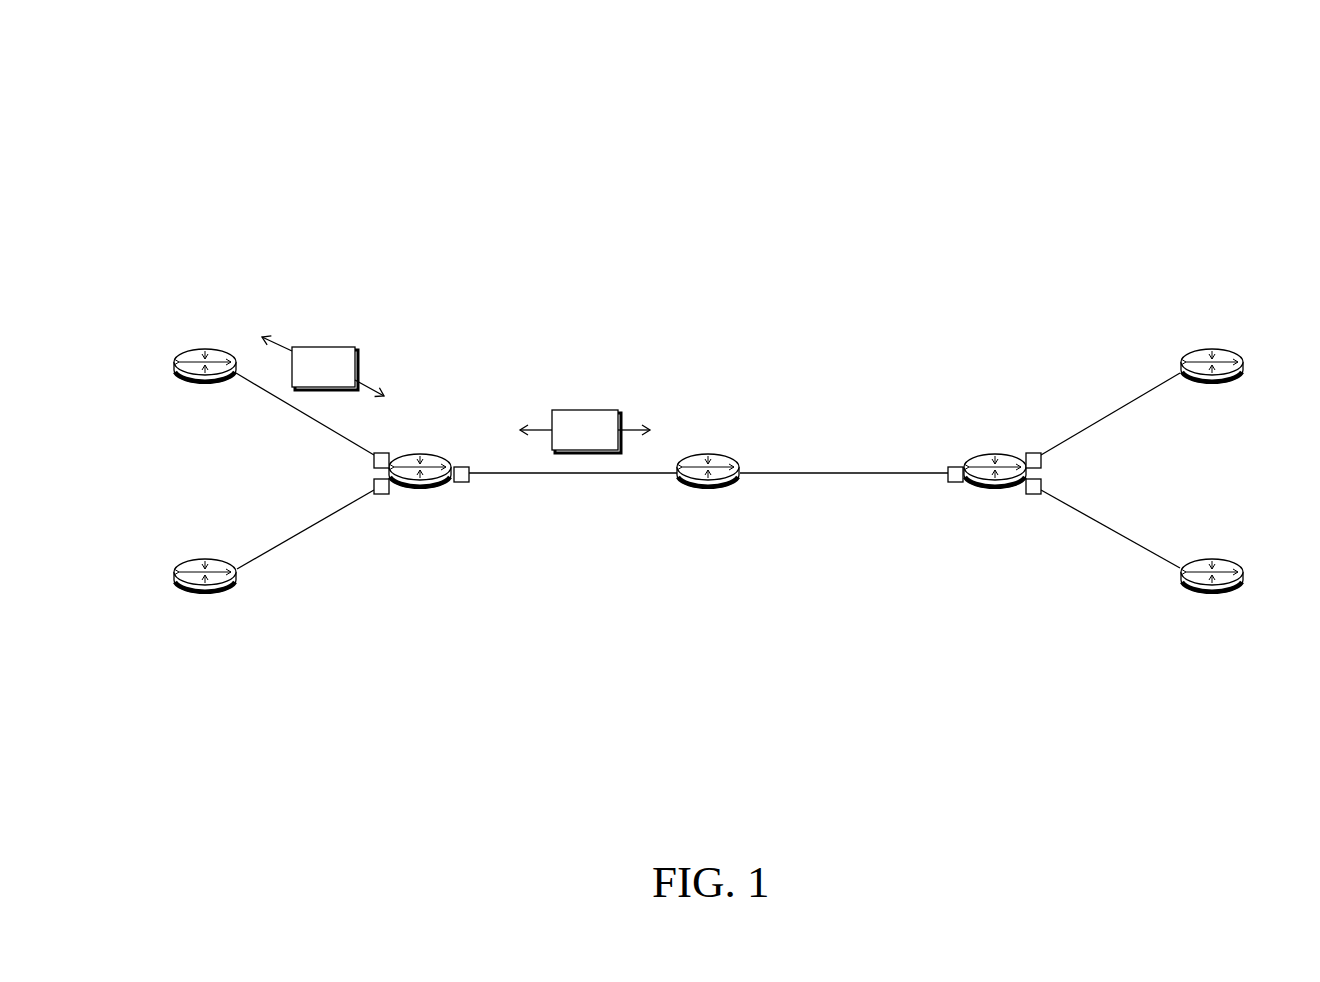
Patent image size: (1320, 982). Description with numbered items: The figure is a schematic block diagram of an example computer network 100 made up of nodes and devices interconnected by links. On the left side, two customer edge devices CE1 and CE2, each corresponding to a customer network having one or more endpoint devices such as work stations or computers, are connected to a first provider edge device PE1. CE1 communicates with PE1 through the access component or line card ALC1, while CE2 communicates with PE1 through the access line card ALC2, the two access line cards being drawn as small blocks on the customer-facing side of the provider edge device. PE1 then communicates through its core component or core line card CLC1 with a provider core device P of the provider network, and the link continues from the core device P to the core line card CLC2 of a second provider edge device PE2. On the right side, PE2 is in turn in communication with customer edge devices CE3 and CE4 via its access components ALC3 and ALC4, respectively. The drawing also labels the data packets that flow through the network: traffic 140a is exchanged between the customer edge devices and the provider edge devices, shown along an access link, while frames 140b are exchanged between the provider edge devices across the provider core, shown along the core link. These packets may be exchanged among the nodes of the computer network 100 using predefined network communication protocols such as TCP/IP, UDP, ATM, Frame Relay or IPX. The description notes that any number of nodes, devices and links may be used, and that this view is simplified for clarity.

The computer network 100 is at (1075, 108).
The traffic 140a is at (323, 366).
The frames 140b is at (585, 431).
The customer edge device CE1 is at (190, 349).
The customer edge device CE2 is at (186, 598).
The customer edge device CE3 is at (1228, 349).
The customer edge device CE4 is at (1230, 598).
The provider edge device PE1 is at (421, 453).
The provider edge device PE2 is at (994, 453).
The provider core device P is at (709, 453).
The access line card ALC1 is at (372, 461).
The access line card ALC2 is at (372, 486).
The access line card ALC3 is at (1043, 461).
The access line card ALC4 is at (1043, 486).
The core line card CLC1 is at (468, 484).
The core line card CLC2 is at (949, 484).